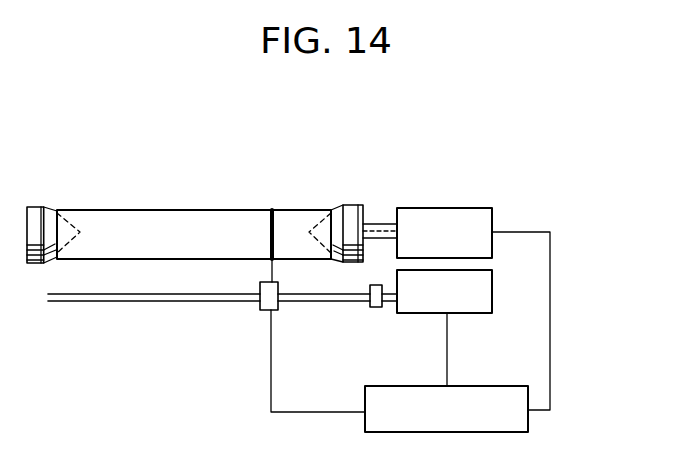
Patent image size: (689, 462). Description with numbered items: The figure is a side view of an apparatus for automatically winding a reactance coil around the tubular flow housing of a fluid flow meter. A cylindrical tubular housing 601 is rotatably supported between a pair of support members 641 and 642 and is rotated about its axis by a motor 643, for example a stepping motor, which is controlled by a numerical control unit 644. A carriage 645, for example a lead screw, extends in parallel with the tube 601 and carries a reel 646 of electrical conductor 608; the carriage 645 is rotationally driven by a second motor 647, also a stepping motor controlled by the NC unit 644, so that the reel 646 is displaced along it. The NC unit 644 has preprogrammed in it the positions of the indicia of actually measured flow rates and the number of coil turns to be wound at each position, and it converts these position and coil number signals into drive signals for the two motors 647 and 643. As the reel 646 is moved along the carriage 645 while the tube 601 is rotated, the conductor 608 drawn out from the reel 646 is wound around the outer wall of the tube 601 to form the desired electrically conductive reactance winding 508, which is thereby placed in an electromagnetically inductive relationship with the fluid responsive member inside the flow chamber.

The cylindrical tubular housing 601 is at (242, 213).
The reactance winding 508 is at (276, 222).
The support member 641 is at (35, 207).
The support member 642 is at (370, 205).
The motor 643 is at (468, 208).
The motor 647 is at (458, 313).
The numerical control (NC) unit 644 is at (530, 420).
The carriage 645 is at (128, 303).
The reel 646 is at (262, 313).
The electrical conductor 608 is at (273, 268).